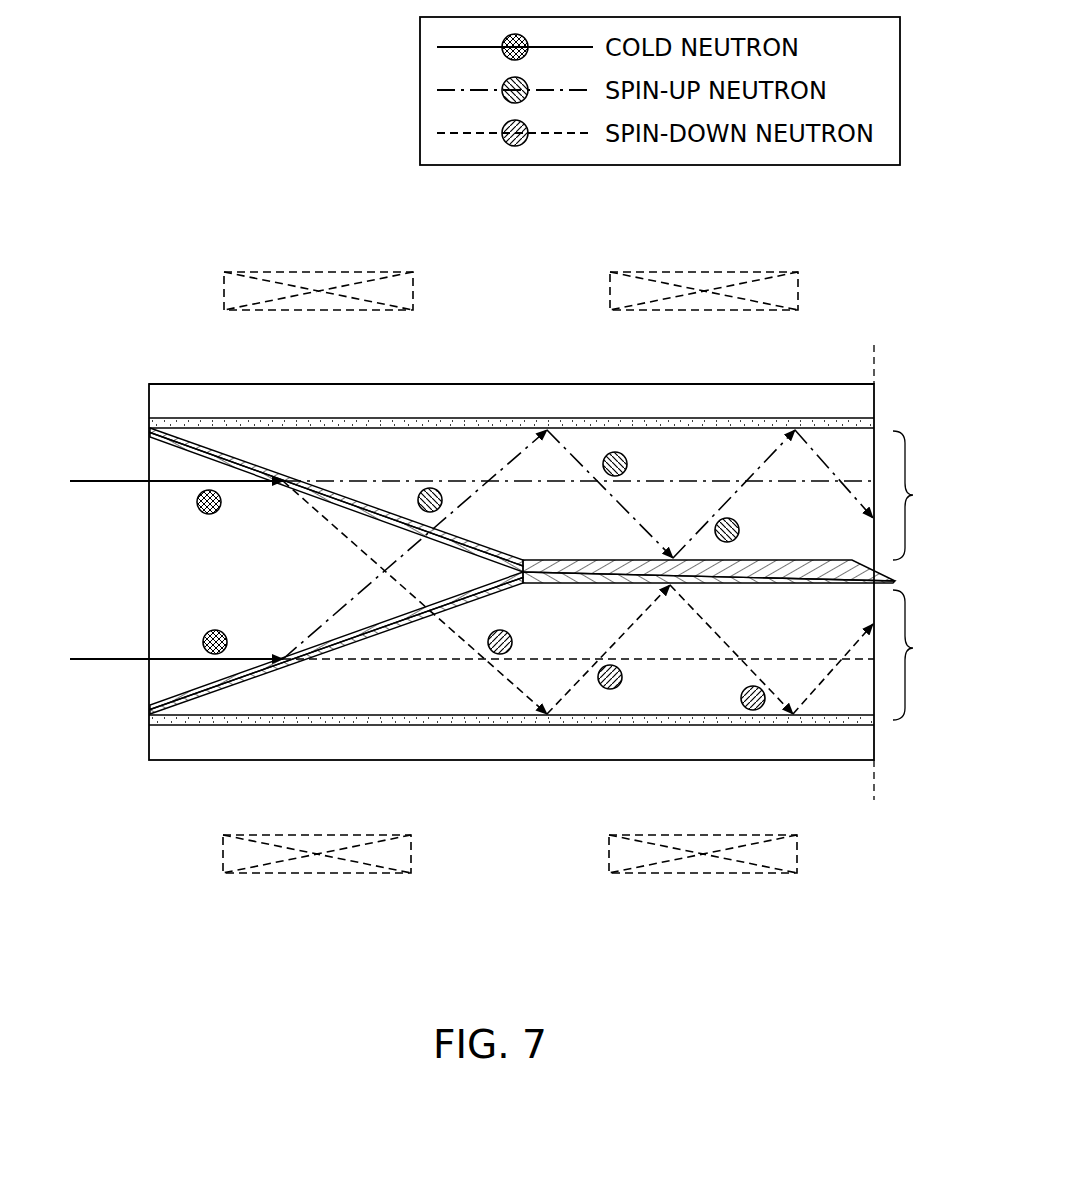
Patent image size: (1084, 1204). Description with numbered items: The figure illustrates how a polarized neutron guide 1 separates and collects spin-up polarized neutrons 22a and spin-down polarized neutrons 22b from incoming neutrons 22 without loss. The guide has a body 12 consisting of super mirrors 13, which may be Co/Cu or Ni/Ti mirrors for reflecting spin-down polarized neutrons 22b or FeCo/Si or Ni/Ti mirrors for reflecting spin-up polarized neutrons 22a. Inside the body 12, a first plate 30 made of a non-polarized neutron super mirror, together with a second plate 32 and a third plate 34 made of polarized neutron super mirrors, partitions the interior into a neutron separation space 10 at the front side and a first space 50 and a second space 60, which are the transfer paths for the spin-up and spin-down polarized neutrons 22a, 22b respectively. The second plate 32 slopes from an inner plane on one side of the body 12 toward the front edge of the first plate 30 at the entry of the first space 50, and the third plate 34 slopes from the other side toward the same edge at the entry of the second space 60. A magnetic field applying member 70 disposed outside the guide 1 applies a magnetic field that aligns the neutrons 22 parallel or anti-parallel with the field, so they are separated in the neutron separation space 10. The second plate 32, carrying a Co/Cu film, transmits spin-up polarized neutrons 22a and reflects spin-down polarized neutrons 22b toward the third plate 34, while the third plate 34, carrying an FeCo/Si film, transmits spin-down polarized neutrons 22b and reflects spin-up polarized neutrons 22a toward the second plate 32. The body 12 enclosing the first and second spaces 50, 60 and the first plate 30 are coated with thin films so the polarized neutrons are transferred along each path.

The polarized neutron guide 1 is at (172, 318).
The neutron separation space 10 is at (198, 579).
The body 12 is at (455, 382).
The super mirrors 13 is at (808, 392).
The neutrons 22 is at (197, 502).
The spin-up polarized neutrons 22a is at (722, 517).
The spin-down polarized neutrons 22b is at (606, 690).
The first plate 30 is at (807, 573).
The second plate 32 is at (190, 450).
The third plate 34 is at (187, 695).
The first space 50 is at (390, 453).
The second space 60 is at (682, 680).
The magnetic field applying member 70 is at (310, 270).